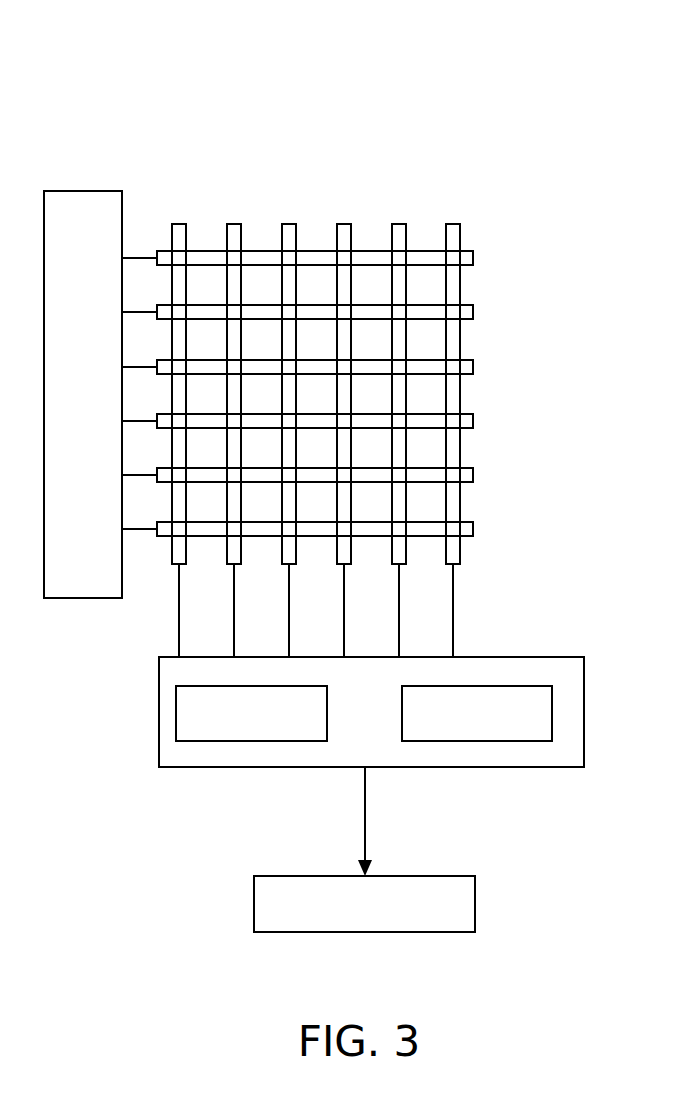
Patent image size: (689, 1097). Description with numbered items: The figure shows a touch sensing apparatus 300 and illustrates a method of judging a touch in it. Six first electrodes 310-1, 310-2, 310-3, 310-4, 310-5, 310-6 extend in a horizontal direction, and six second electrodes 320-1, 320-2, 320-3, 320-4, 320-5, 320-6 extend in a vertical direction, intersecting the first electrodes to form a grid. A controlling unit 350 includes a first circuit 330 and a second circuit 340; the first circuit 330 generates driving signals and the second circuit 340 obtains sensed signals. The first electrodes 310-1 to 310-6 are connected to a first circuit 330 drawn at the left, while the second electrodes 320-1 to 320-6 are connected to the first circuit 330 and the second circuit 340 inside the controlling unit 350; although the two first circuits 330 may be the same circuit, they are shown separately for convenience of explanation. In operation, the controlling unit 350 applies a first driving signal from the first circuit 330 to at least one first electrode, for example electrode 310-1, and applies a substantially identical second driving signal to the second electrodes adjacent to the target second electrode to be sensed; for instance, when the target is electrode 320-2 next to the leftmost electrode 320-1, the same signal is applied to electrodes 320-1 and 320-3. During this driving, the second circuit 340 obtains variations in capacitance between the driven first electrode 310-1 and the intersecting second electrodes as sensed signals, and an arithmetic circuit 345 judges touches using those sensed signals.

The memory device / array system 300 is at (538, 151).
The first electrode 310-1 is at (475, 258).
The first electrode 310-2 is at (475, 312).
The first electrode 310-3 is at (475, 367).
The first electrode 310-4 is at (475, 421).
The first electrode 310-5 is at (475, 475).
The first electrode 310-6 is at (475, 529).
The second electrode 320-1 is at (179, 223).
The second electrode 320-2 is at (234, 223).
The second electrode 320-3 is at (289, 223).
The second electrode 320-4 is at (344, 223).
The second electrode 320-5 is at (399, 223).
The second electrode 320-6 is at (453, 223).
The first circuit 330 is at (84, 599).
The second circuit 340 is at (510, 742).
The arithmetic circuit 345 is at (476, 905).
The controlling unit 350 is at (585, 692).